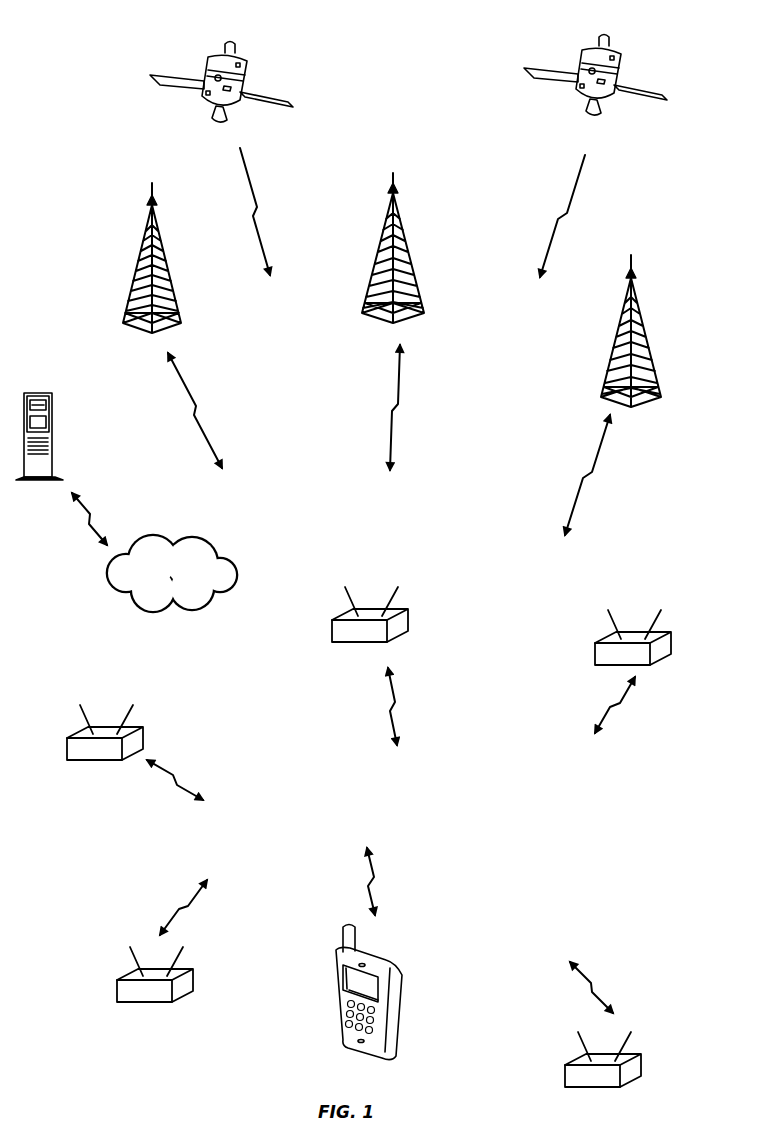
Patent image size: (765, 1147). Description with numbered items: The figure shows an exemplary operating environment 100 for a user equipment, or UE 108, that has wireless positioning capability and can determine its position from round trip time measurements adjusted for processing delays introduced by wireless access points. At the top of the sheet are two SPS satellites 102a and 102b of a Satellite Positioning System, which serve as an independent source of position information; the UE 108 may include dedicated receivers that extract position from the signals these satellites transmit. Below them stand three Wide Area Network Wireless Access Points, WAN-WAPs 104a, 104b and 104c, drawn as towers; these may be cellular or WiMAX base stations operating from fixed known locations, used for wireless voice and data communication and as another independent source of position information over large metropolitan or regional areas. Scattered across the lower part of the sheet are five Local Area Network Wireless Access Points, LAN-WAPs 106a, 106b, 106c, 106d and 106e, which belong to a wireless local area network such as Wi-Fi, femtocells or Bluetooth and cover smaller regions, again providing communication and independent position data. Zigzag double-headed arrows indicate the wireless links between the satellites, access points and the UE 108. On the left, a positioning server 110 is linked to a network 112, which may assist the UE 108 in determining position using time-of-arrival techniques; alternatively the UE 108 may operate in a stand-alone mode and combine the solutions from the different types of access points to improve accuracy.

The operating environment 100 is at (54, 26).
The SPS satellite 102a is at (235, 46).
The SPS satellite 102b is at (600, 38).
The Wide Area Network Wireless Access Point 104a is at (151, 190).
The Wide Area Network Wireless Access Point 104b is at (394, 179).
The Wide Area Network Wireless Access Point 104c is at (632, 260).
The Local Area Network Wireless Access Point 106a is at (144, 728).
The Local Area Network Wireless Access Point 106b is at (409, 613).
The Local Area Network Wireless Access Point 106c is at (596, 647).
The Local Area Network Wireless Access Point 106d is at (194, 979).
The Local Area Network Wireless Access Point 106e is at (566, 1069).
The user equipment 108 is at (403, 976).
The positioning server 110 is at (33, 393).
The network 112 is at (190, 537).